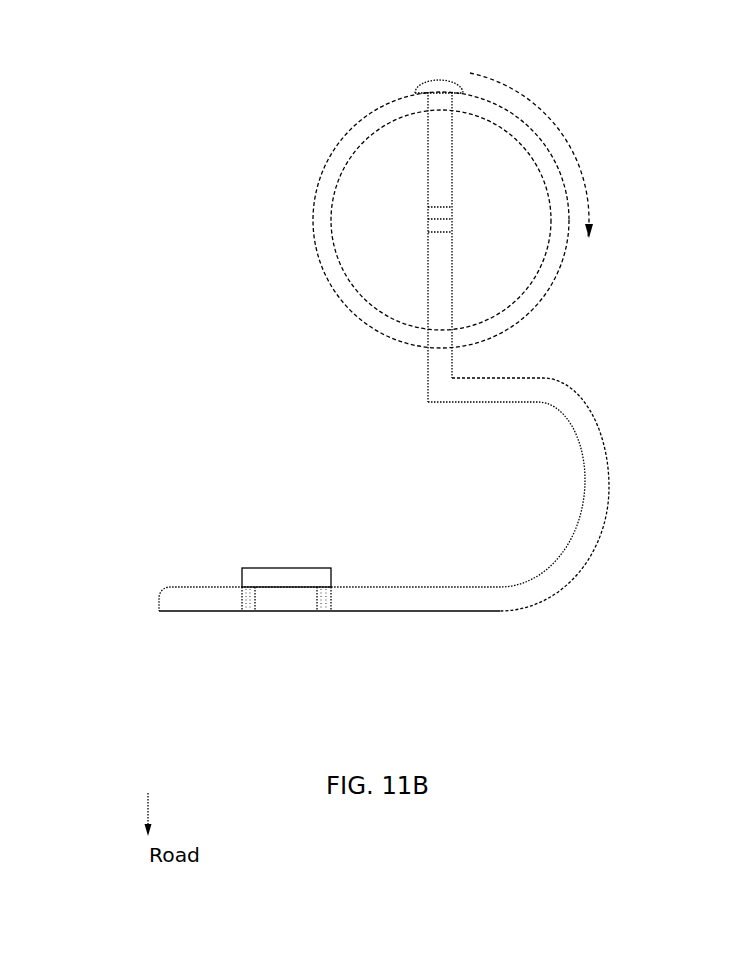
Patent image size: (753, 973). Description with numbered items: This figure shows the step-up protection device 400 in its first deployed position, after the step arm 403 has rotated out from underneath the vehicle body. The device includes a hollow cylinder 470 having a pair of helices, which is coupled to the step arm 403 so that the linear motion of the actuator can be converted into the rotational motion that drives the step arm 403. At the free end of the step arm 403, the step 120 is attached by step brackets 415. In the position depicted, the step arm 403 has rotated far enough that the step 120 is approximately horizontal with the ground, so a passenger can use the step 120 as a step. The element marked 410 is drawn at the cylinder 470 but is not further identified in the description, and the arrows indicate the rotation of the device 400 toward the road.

The step-up protection device 400 is at (146, 60).
The hollow cylinder 470 is at (336, 154).
The step arm 403 is at (432, 277).
The hinge / pivot connection 410 is at (442, 219).
The step 120 is at (286, 561).
The step brackets 415 is at (288, 613).